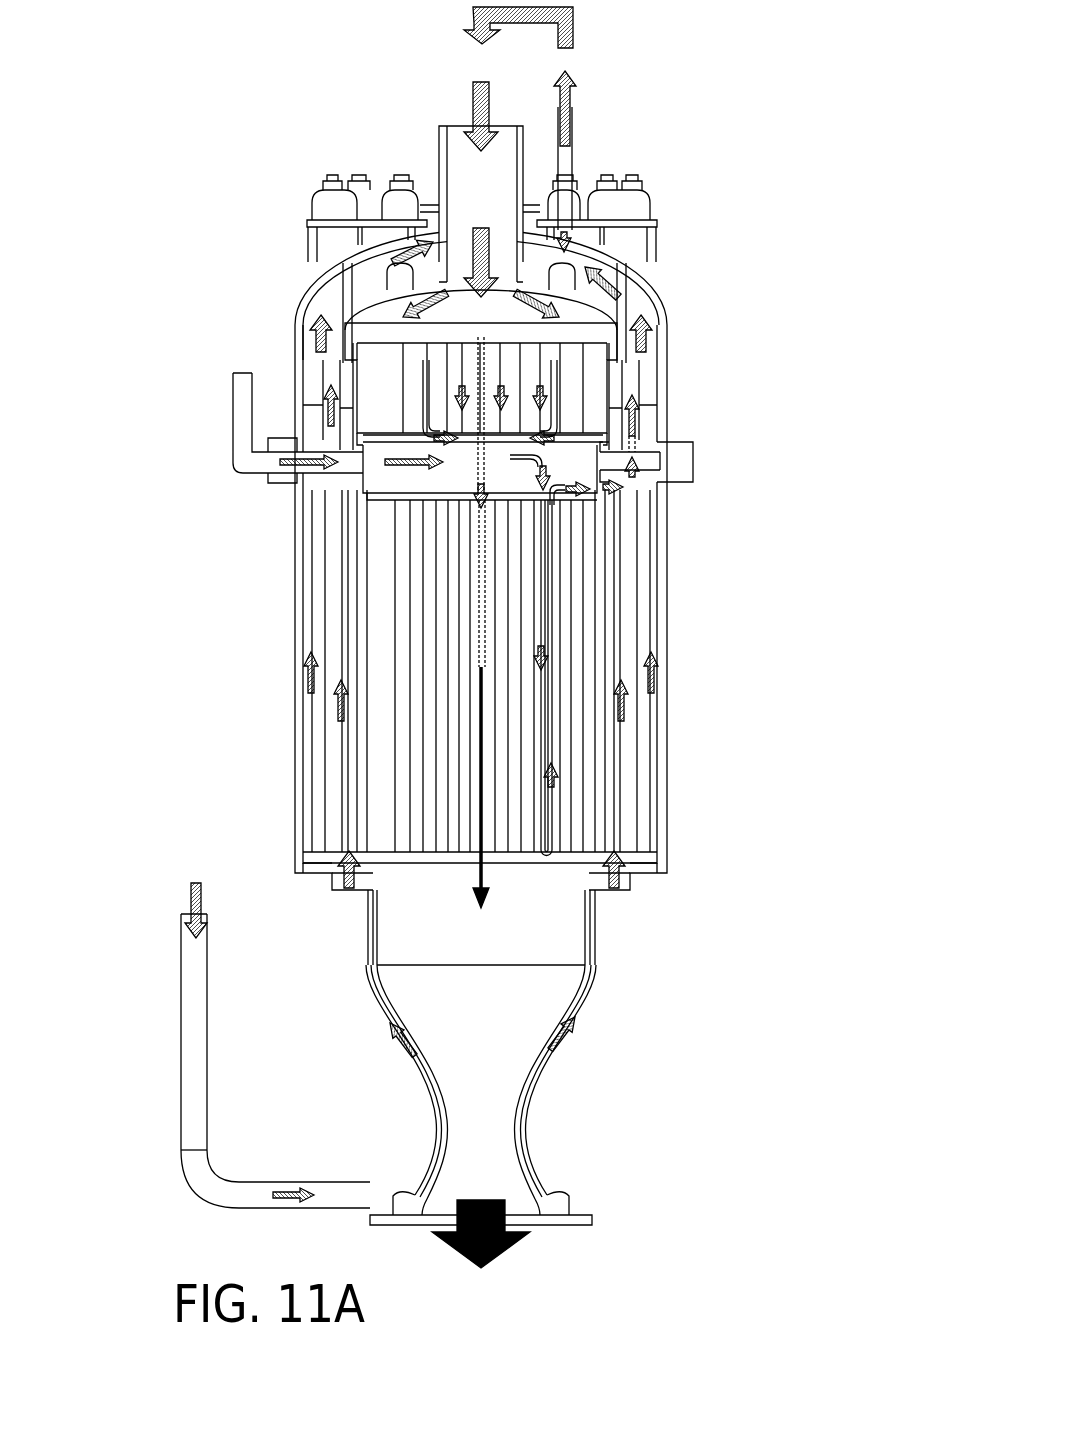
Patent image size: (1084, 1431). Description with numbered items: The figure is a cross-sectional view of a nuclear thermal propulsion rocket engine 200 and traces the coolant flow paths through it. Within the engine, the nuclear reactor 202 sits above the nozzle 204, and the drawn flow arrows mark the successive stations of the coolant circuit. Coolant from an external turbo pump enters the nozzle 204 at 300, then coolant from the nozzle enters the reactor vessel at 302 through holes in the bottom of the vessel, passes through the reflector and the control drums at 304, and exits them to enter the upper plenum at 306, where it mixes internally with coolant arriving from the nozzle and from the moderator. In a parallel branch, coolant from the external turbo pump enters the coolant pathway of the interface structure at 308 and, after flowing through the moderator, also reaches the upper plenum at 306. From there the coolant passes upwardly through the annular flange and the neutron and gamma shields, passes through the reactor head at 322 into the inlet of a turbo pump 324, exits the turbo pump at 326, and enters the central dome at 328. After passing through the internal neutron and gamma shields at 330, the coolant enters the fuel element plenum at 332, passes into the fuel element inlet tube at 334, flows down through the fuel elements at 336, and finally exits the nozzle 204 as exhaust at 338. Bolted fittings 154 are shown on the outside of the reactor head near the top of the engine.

The nuclear thermal propulsion rocket engine 200 is at (745, 252).
The bolts 154 is at (640, 210).
The nuclear reactor 202 is at (630, 626).
The nozzle 204 is at (412, 1077).
The coolant entry into nozzle 300 is at (191, 861).
The coolant entry into reactor vessel 302 is at (636, 870).
The coolant passage through reflector and control drums 304 is at (671, 672).
The coolant entry into upper plenum 306 is at (633, 490).
The coolant entry into coolant pathway of interface structure 308 is at (266, 470).
The coolant passage through reactor head 322 is at (650, 348).
The turbo pump 324 is at (579, 117).
The coolant exit from turbo pump 326 is at (506, 92).
The coolant entry into central dome 328 is at (458, 230).
The coolant passage through internal neutron and gamma shields 330 is at (482, 330).
The coolant entry into fuel element plenum 332 is at (410, 402).
The coolant entry into fuel element inlet tube 334 is at (466, 475).
The coolant passage through fuel elements 336 is at (464, 862).
The exhaust exit from nozzle 338 is at (530, 1253).